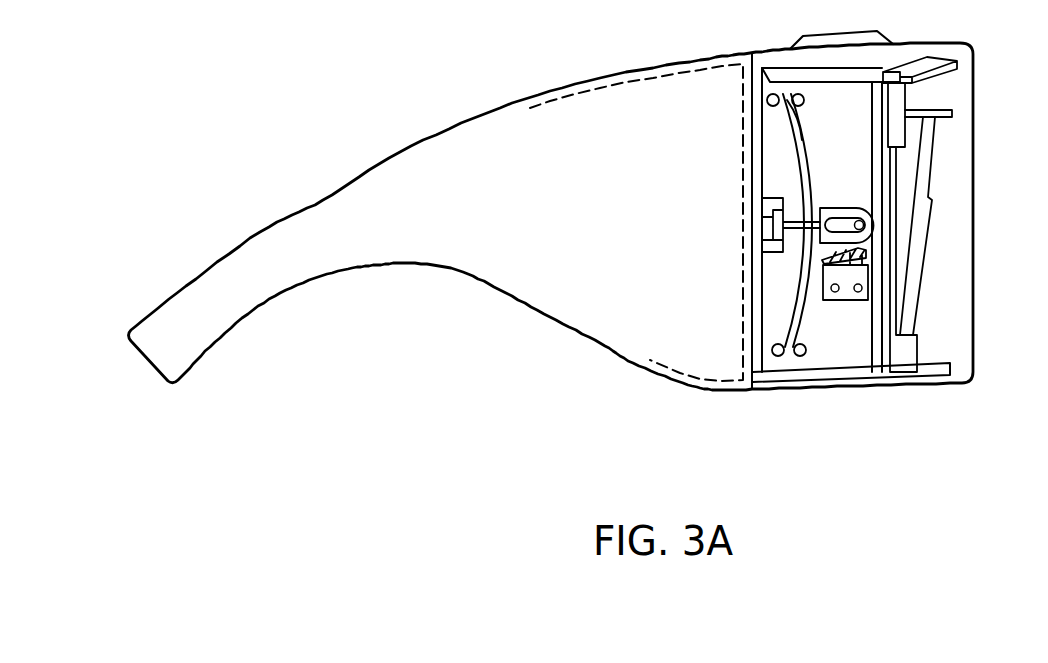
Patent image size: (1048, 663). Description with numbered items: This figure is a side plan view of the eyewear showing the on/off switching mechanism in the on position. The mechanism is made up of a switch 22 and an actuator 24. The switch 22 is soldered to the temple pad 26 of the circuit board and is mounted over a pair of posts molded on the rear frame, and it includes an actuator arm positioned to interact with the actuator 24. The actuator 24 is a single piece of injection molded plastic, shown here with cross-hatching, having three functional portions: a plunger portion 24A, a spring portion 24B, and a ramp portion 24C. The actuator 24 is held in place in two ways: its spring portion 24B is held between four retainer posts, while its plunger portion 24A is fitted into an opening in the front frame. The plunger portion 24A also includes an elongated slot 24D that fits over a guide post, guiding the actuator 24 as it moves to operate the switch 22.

The switch 22 is at (858, 280).
The actuator 24 is at (786, 152).
The plunger portion 24A is at (850, 197).
The spring portion 24B is at (806, 136).
The ramp portion 24C is at (866, 249).
The elongated slot 24D is at (846, 222).
The temple pad 26 is at (760, 246).